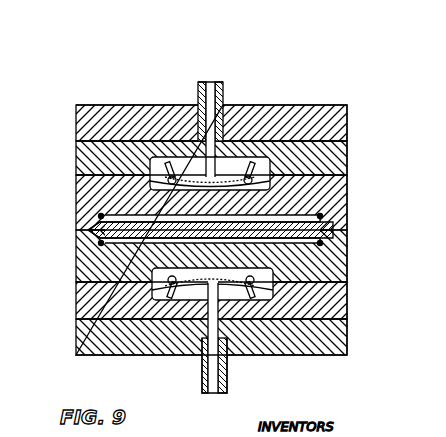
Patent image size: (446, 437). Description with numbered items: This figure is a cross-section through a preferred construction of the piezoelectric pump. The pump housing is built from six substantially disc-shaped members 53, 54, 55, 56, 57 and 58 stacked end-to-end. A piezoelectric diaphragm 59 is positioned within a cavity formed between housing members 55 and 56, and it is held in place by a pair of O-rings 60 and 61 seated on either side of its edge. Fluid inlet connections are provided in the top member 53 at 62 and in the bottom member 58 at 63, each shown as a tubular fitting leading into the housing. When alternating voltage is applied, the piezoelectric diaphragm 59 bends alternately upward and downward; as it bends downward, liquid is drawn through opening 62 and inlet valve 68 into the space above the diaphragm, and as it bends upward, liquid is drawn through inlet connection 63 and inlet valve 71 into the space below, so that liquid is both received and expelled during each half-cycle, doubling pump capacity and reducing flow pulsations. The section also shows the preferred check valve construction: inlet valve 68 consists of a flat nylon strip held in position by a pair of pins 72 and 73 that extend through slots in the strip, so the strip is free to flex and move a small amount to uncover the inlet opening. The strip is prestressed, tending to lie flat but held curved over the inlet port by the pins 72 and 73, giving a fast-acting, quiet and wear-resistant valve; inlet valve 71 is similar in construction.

The disc-shaped housing member 53 is at (349, 114).
The disc-shaped housing member 54 is at (348, 150).
The disc-shaped housing member 55 is at (348, 184).
The disc-shaped housing member 56 is at (348, 258).
The disc-shaped housing member 57 is at (348, 296).
The disc-shaped housing member 58 is at (348, 327).
The piezoelectric diaphragm 59 is at (333, 219).
The O-ring 60 is at (101, 216).
The O-ring 61 is at (101, 243).
The fluid inlet connection 62 is at (224, 86).
The fluid inlet connection 63 is at (228, 382).
The inlet valve 68 is at (211, 143).
The inlet valve 71 is at (152, 297).
The pin 72 is at (150, 189).
The pin 73 is at (272, 174).